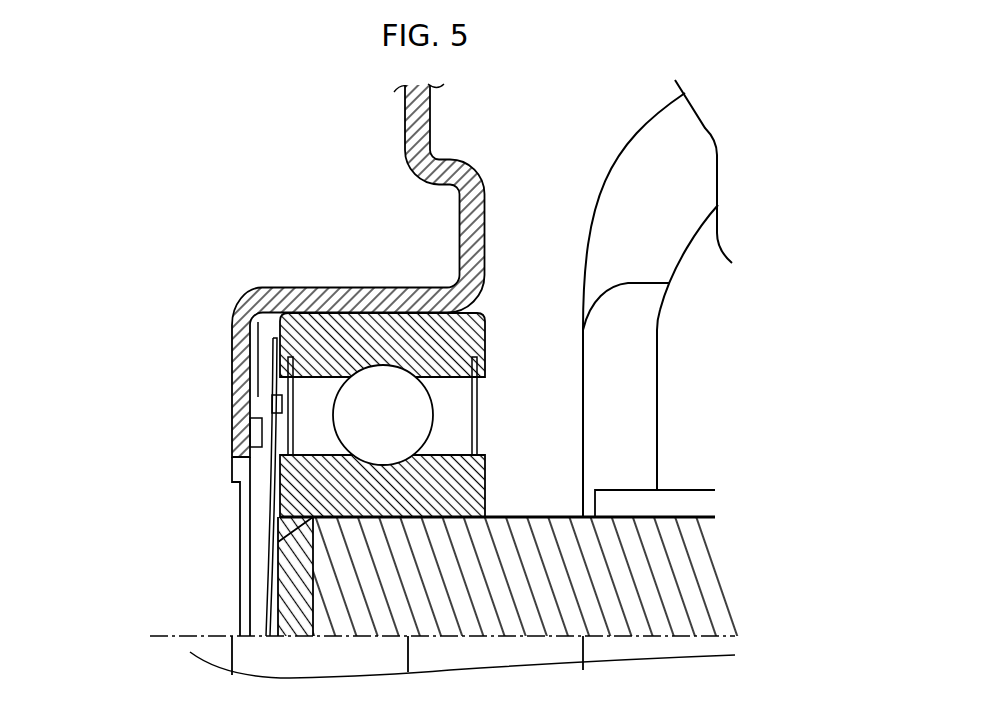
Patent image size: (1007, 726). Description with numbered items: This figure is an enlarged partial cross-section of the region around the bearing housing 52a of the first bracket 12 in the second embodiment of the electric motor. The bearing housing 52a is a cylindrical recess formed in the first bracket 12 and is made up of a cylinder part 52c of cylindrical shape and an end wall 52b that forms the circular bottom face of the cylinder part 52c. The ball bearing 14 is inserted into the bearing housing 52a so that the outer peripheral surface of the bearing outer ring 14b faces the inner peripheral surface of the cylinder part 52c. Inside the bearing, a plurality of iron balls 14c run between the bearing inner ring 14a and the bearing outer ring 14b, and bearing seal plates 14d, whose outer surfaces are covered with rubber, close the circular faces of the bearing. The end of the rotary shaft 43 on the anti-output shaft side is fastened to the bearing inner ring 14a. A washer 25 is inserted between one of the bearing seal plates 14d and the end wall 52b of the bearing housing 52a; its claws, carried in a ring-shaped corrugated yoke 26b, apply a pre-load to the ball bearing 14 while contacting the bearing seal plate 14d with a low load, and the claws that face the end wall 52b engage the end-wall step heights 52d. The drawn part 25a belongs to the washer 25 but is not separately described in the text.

The first bracket 12 is at (410, 130).
The ball bearing 14 is at (567, 413).
The bearing inner ring 14a is at (453, 482).
The bearing outer ring 14b is at (433, 349).
The iron balls 14c is at (392, 405).
The bearing seal plates 14d is at (475, 432).
The washer 25 is at (169, 487).
The fixing portion 25a is at (260, 445).
The yoke 26b is at (265, 472).
The rotary shaft 43 is at (368, 586).
The bearing housing 52a is at (255, 392).
The end wall 52b is at (252, 342).
The cylinder part 52c is at (343, 300).
The end-wall step heights 52d is at (243, 400).